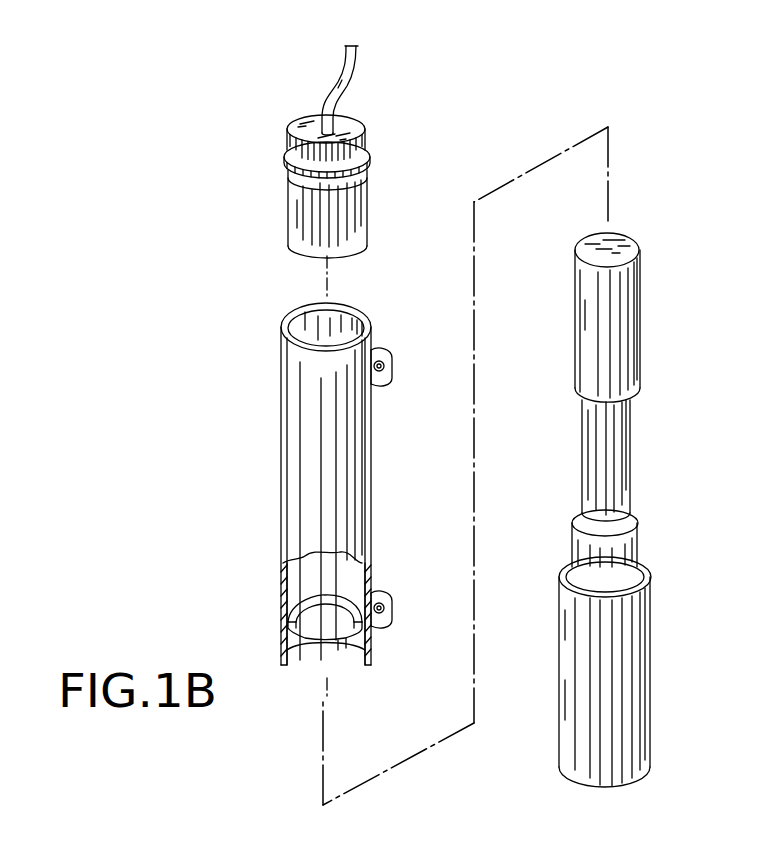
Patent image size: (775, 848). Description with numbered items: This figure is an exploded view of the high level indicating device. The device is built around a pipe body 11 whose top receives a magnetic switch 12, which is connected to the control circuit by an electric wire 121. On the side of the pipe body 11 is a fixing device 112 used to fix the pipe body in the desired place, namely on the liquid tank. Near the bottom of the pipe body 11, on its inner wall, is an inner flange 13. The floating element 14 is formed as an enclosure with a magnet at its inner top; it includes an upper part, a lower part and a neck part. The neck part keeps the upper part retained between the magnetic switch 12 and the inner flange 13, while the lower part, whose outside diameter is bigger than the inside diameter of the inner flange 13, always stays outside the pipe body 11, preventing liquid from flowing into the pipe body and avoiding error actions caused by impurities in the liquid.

The pipe body 11 is at (281, 498).
The fixing device 112 is at (390, 362).
The magnetic switch 12 is at (298, 124).
The electric wire 121 is at (353, 68).
The inner flange 13 is at (306, 644).
The floating element 14 is at (663, 515).